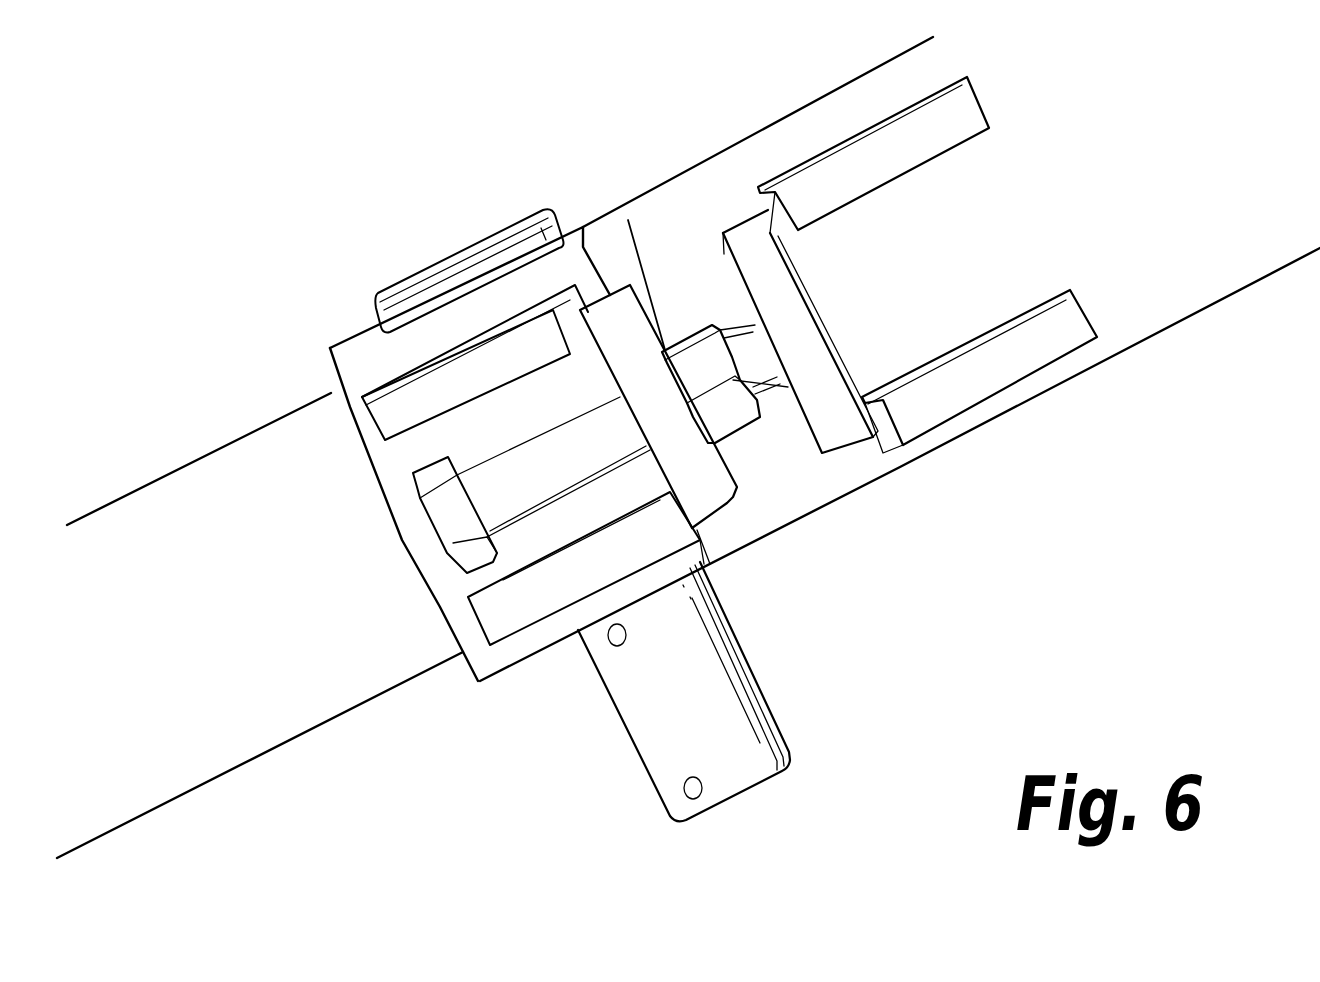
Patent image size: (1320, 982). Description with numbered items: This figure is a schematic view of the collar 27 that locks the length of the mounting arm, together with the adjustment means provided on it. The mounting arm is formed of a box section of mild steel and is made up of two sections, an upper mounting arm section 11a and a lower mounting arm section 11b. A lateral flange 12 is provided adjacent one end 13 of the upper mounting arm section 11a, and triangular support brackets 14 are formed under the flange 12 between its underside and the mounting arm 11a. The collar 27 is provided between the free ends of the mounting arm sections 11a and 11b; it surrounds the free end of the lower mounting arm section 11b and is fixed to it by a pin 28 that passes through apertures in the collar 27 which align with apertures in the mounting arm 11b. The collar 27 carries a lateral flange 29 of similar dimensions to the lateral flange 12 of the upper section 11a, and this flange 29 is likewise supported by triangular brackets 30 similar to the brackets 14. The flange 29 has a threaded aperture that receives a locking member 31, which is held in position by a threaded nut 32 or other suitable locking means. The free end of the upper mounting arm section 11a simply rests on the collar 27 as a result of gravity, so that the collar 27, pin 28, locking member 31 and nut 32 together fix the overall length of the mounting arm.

The mounting arm section 11a is at (1211, 244).
The mounting arm section 11b is at (309, 712).
The lateral flange 12 is at (838, 435).
The end of the mounting arm 13 is at (596, 213).
The triangular support brackets 14 is at (1000, 370).
The collar 27 is at (540, 680).
The pin 28 is at (733, 750).
The lateral flange 29 is at (610, 303).
The triangular brackets 30 is at (380, 393).
The locking member 31 is at (507, 455).
The threaded nut 32 is at (695, 353).